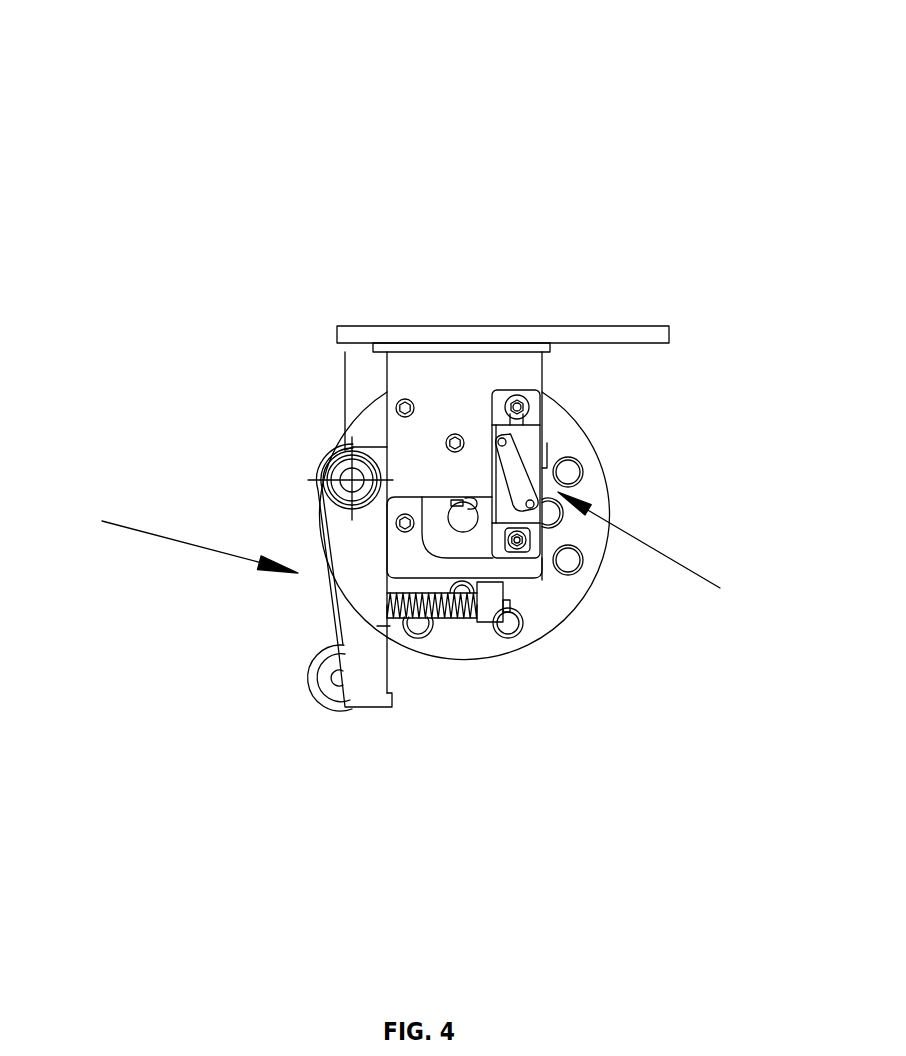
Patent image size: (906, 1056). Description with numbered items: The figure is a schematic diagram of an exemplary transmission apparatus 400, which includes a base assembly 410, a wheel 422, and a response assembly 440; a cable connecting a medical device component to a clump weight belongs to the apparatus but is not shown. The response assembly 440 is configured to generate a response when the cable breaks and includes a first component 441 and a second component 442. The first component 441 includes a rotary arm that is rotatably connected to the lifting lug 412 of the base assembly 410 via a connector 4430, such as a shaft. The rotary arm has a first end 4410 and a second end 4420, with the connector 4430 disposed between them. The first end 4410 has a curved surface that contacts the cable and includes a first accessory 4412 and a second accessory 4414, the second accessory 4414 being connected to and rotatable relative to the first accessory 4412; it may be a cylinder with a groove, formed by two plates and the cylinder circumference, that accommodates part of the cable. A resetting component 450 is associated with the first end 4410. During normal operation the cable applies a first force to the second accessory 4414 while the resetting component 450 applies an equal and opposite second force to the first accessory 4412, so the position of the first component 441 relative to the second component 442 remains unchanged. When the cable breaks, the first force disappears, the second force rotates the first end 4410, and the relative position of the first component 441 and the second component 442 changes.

The transmission apparatus 400 is at (442, 106).
The base assembly 410 is at (478, 326).
The lifting lug 412 is at (408, 432).
The wheel 422 is at (568, 435).
The second end 4420 is at (465, 447).
The connector 4430 is at (326, 472).
The response assembly 440 is at (758, 712).
The first component 441 is at (173, 542).
The second component 442 is at (666, 555).
The first end 4410 is at (190, 617).
The first accessory 4412 is at (348, 641).
The second accessory 4414 is at (320, 682).
The resetting component 450 is at (433, 615).